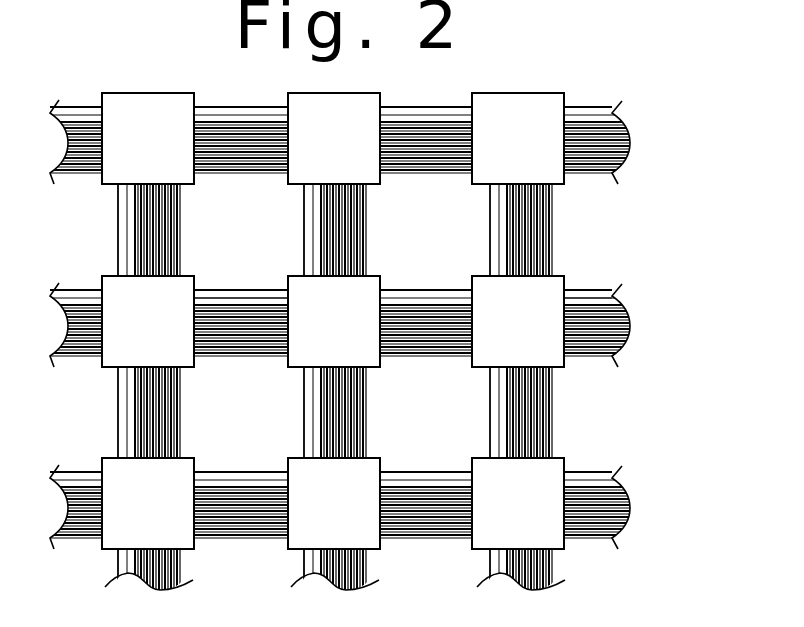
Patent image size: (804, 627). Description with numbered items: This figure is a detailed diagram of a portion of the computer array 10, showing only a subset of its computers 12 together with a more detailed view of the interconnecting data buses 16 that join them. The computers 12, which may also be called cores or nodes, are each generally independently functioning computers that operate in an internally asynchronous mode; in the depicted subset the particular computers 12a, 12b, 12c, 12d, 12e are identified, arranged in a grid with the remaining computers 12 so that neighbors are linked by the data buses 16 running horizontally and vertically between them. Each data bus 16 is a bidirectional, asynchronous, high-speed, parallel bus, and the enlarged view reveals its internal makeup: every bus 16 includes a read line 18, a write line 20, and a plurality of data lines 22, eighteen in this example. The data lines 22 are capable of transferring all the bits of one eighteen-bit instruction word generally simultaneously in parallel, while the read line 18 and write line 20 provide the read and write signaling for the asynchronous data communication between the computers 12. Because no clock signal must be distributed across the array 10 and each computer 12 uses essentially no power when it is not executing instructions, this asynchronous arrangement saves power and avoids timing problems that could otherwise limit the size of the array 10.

The computer array 10 is at (389, 348).
The computer 12 is at (131, 153).
The computer 12a is at (308, 153).
The computer 12b is at (492, 336).
The computer 12c is at (122, 336).
The computer 12d is at (308, 518).
The computer 12e is at (308, 336).
The interconnecting data bus 16 is at (445, 178).
The read line 18 is at (252, 296).
The write line 20 is at (213, 297).
The data lines 22 is at (428, 323).